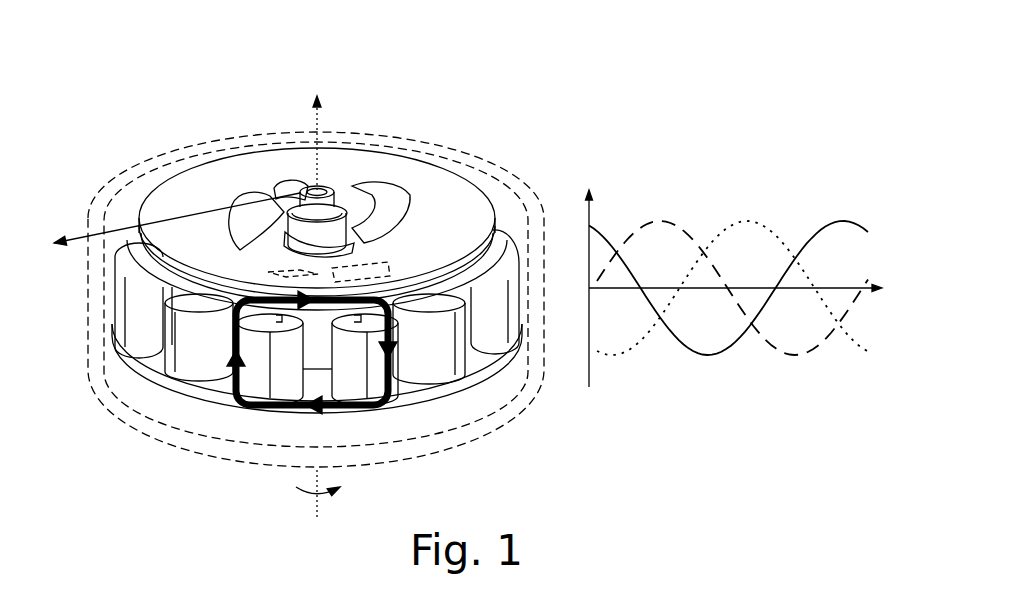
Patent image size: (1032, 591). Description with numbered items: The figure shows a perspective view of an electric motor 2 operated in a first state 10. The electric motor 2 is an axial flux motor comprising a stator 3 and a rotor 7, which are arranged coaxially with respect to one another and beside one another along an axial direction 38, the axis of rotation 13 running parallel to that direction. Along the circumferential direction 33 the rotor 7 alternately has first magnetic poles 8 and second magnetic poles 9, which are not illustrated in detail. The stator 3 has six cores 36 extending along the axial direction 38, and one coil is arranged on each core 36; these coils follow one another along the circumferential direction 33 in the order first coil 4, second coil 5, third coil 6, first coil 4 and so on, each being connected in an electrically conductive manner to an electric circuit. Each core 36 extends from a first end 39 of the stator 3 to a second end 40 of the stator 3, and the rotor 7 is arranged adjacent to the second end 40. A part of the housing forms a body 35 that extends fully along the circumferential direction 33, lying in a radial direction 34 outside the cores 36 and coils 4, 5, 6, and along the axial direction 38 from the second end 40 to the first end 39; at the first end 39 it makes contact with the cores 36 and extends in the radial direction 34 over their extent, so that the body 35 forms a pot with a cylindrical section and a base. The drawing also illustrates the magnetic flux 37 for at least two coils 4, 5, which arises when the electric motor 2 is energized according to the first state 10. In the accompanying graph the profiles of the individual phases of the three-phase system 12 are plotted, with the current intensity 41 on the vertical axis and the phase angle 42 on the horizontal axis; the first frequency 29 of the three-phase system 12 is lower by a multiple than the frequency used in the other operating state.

The electric motor 2 is at (492, 135).
The stator 3 is at (418, 400).
The first coil 4 is at (450, 365).
The second coil 5 is at (222, 380).
The third coil 6 is at (135, 345).
The rotor 7 is at (460, 193).
The first magnetic poles 8 is at (355, 277).
The second magnetic poles 9 is at (282, 277).
The first state 10 is at (462, 92).
The three-phase system 12 is at (747, 222).
The axis of rotation 13 is at (318, 123).
The first frequency 29 is at (857, 208).
The circumferential direction 33 is at (329, 505).
The radial direction 34 is at (73, 236).
The body 35 is at (88, 342).
The cores 36 is at (377, 385).
The magnetic flux 37 is at (277, 404).
The axial direction 38 is at (318, 98).
The first end 39 is at (160, 445).
The second end 40 is at (176, 150).
The current intensity 41 is at (607, 278).
The phase angle 42 is at (748, 305).